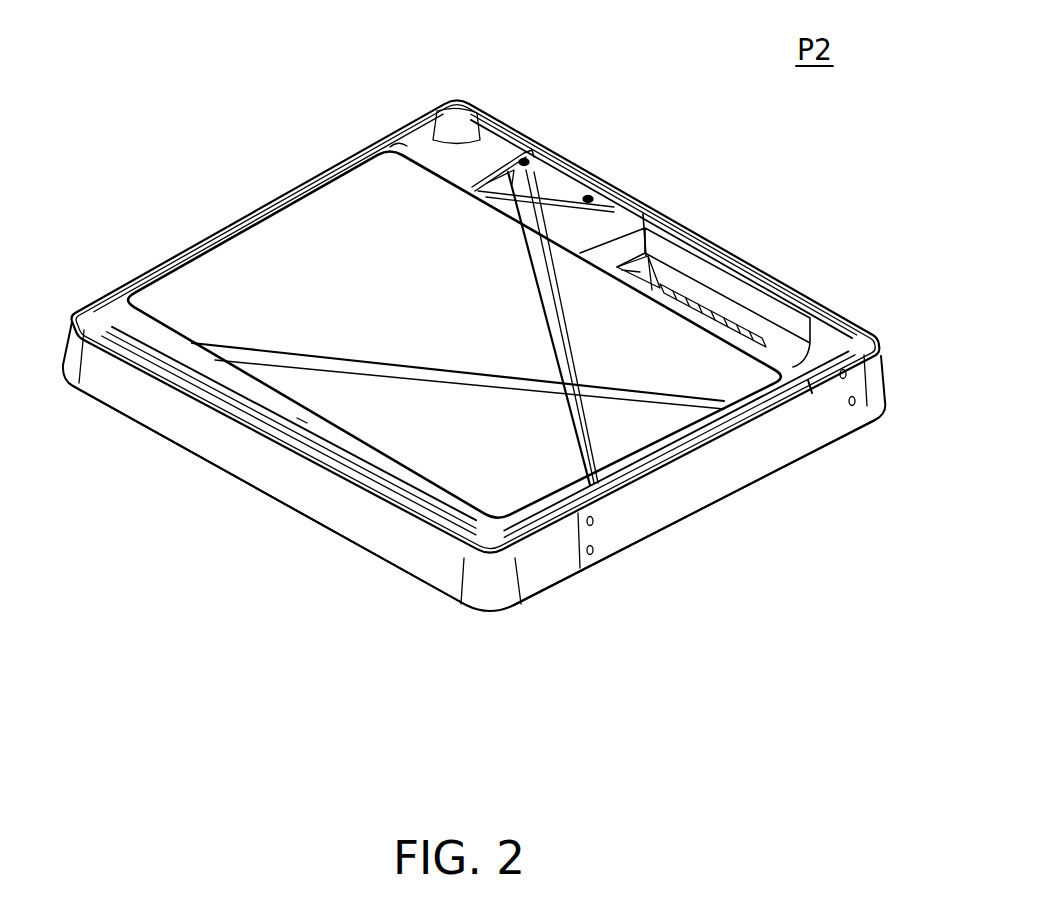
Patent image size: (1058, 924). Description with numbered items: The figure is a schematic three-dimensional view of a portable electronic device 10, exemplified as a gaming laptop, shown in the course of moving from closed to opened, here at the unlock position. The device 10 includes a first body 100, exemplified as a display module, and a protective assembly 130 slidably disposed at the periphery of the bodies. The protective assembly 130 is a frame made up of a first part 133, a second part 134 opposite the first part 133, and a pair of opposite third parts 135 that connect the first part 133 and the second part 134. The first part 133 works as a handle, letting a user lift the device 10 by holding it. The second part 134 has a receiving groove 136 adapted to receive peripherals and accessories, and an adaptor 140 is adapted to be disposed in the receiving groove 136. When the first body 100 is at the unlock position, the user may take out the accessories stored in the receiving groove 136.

The portable electronic device 10 is at (711, 608).
The first body 100 is at (210, 270).
The protective assembly 130 is at (474, 355).
The first part 133 is at (273, 470).
The second part 134 is at (660, 205).
The third parts 135 is at (292, 190).
The receiving groove 136 is at (731, 287).
The adaptor 140 is at (550, 182).